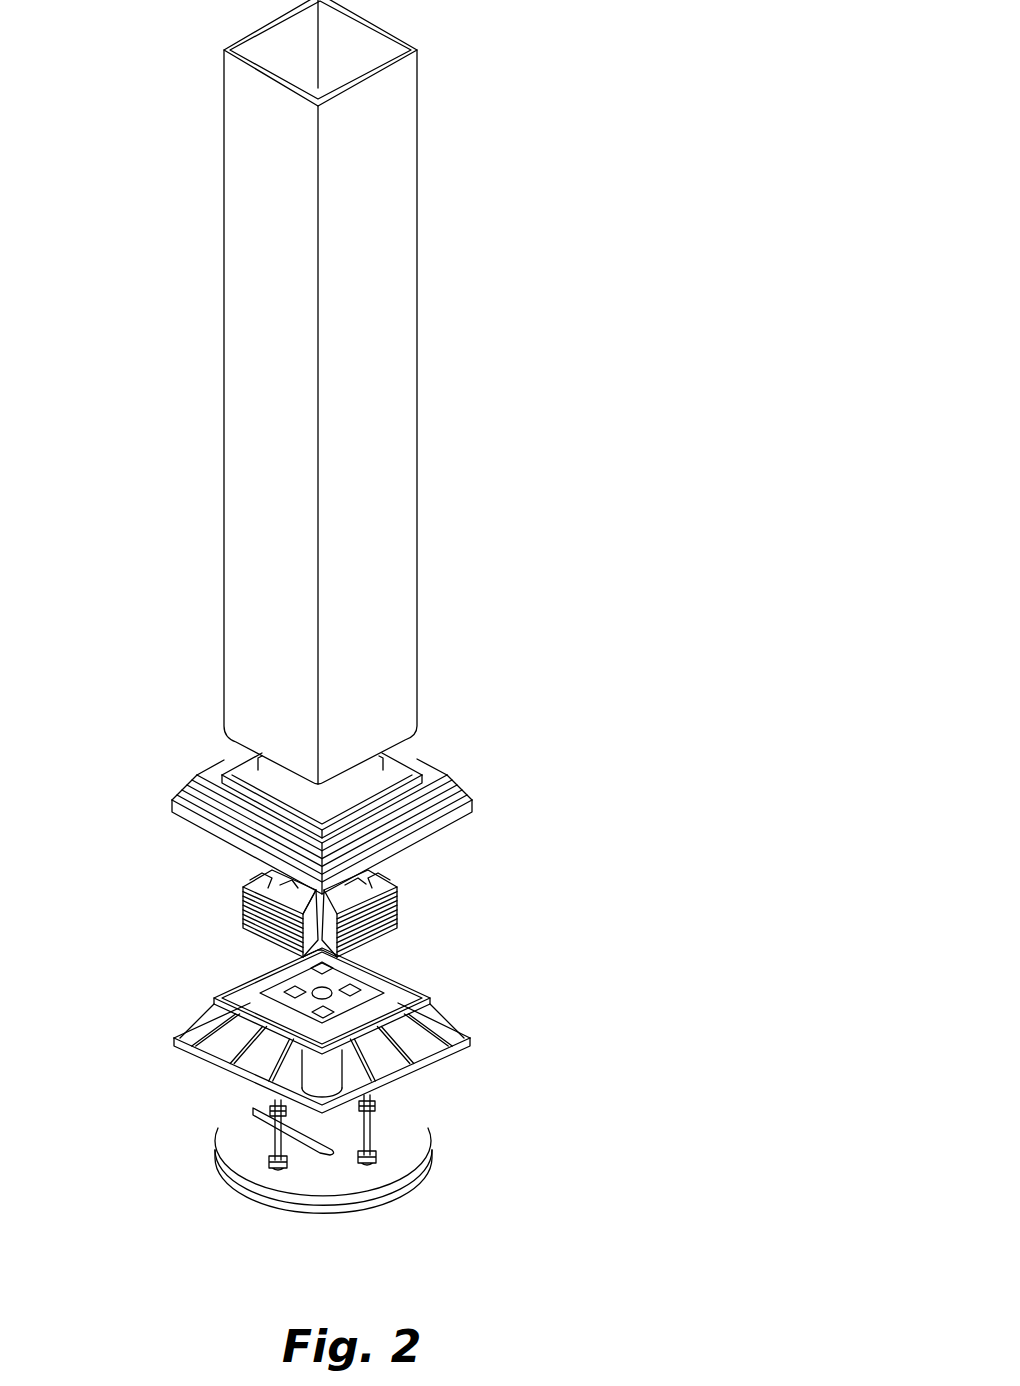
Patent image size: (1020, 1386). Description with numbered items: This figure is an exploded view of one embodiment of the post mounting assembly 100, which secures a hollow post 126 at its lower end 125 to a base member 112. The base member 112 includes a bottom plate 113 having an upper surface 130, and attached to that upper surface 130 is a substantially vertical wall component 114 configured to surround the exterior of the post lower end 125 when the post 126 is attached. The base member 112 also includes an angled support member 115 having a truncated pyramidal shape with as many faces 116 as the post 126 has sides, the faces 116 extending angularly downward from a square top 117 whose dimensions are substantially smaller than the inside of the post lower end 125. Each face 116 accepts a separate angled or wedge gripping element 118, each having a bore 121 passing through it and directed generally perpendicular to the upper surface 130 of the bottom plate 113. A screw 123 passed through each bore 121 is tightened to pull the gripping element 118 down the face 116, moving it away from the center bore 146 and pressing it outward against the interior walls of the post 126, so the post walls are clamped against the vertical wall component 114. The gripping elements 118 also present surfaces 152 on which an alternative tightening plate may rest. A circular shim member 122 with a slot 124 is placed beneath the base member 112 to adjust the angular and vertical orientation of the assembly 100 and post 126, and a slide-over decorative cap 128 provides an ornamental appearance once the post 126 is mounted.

The post mounting assembly 100 is at (620, 765).
The base member 112 is at (335, 1008).
The bottom plate 113 is at (332, 1008).
The vertical wall component 114 is at (370, 978).
The angled support member 115 is at (262, 968).
The faces 116 is at (275, 1012).
The top 117 is at (300, 945).
The angled/wedge gripping element 118 is at (388, 906).
The bore 121 is at (398, 866).
The shim member 122 is at (312, 1158).
The screw 123 is at (372, 1105).
The slot 124 is at (255, 1109).
The lower end 125 is at (430, 721).
The hollow post 126 is at (380, 498).
The decorative cap 128 is at (388, 790).
The upper surface 130 is at (450, 1030).
The center bore 146 is at (332, 986).
The surfaces 152 is at (258, 866).